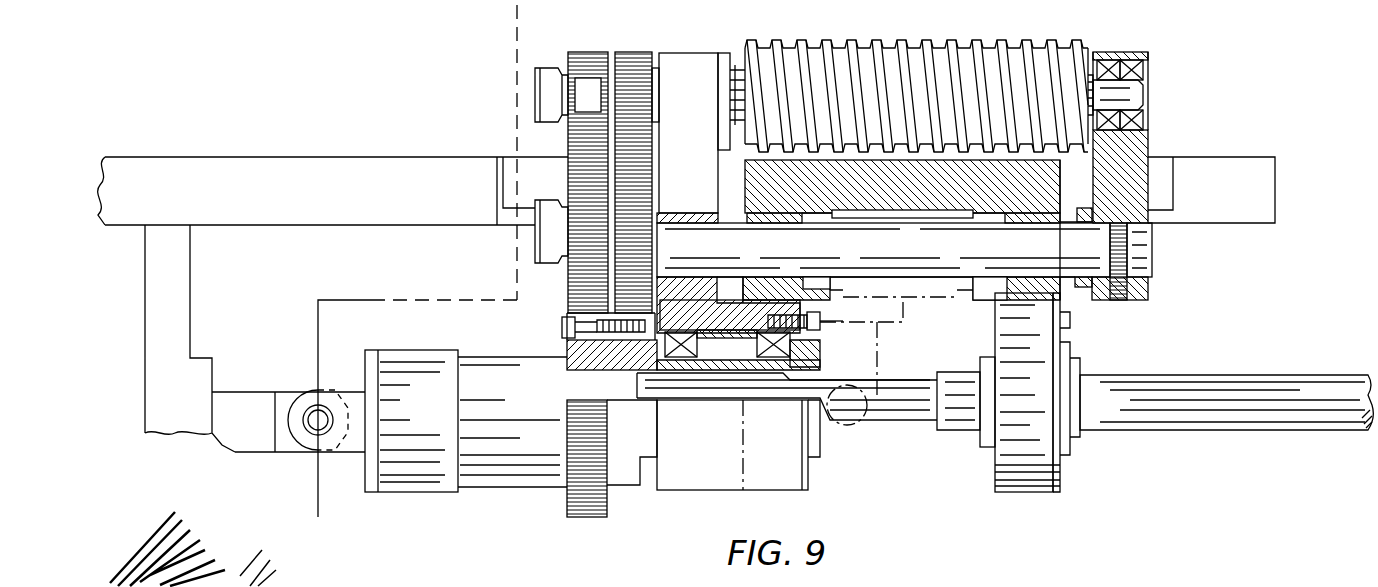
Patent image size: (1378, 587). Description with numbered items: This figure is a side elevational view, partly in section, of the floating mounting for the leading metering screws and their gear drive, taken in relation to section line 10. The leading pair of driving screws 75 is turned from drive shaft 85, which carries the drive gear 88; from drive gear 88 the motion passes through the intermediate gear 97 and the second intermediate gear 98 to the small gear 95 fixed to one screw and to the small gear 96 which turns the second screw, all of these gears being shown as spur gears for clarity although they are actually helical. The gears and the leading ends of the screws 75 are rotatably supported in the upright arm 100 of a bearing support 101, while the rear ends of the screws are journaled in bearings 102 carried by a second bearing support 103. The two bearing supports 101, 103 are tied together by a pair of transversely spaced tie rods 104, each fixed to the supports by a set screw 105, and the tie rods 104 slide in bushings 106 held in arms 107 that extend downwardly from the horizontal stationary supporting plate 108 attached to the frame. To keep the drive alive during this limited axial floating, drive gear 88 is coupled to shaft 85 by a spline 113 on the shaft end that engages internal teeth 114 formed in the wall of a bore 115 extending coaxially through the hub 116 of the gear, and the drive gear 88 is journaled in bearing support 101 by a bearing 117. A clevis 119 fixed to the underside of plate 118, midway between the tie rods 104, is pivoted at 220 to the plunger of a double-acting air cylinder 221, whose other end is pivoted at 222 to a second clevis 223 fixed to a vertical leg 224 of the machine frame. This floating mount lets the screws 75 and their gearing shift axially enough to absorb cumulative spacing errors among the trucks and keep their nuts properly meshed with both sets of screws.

The section line of FIG. 10 is at (505, 11).
The driving screws 75 is at (955, 42).
The drive shaft 85 is at (1228, 420).
The drive gear 88 is at (567, 497).
The small gear 95 is at (576, 52).
The small gear 96 is at (638, 52).
The intermediate gear 97 is at (568, 162).
The second intermediate gear 98 is at (551, 165).
The upright arm 100 is at (699, 57).
The bearing support 101 is at (705, 307).
The bearings 102 is at (1130, 56).
The second bearing support 103 is at (1145, 147).
The tie rods 104 is at (1018, 250).
The set screw 105 is at (1118, 296).
The bushings 106 is at (779, 281).
The arms 107 is at (831, 290).
The horizontal stationary supporting plate 108 is at (968, 199).
The spline 113 is at (722, 393).
The internal teeth 114 is at (640, 372).
The bore 115 is at (598, 372).
The hub 116 is at (687, 371).
The bearing 117 is at (768, 359).
The plate 118 is at (948, 295).
The clevis 119 is at (877, 345).
The pivot 220 is at (860, 413).
The double-acting air cylinder 221 is at (483, 478).
The pivot 222 is at (318, 410).
The second clevis 223 is at (243, 392).
The vertical leg 224 is at (190, 287).